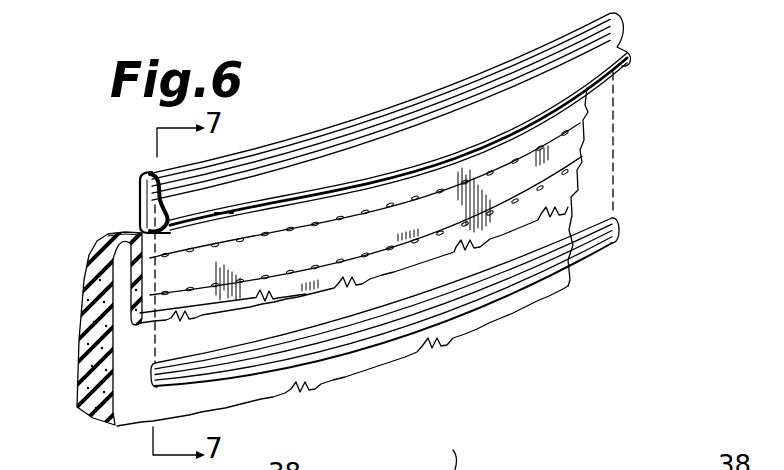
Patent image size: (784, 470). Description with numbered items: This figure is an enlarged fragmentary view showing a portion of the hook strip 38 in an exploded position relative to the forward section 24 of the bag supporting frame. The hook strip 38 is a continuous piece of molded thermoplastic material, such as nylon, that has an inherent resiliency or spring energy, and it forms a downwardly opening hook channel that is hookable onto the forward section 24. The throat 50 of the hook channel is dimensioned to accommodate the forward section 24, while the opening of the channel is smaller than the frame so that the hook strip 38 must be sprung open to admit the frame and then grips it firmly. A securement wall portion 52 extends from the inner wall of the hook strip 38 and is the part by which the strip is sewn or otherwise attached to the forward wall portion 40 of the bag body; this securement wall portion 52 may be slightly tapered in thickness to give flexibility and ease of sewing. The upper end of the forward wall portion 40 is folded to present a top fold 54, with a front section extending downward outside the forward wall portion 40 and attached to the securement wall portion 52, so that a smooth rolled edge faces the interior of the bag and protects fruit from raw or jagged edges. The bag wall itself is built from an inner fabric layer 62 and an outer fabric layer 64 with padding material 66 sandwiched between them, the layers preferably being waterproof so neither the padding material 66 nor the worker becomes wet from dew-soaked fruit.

The hook strip 38 is at (407, 118).
The securement wall portion 52 is at (575, 140).
The forward section of the support frame 24 is at (597, 246).
The forward wall portion 40 is at (81, 318).
The top fold 54 is at (122, 234).
The inner fabric layer 62 is at (84, 296).
The padding material 66 is at (82, 388).
The outer fabric layer 64 is at (132, 413).
The throat of the hook channel 50 is at (448, 446).